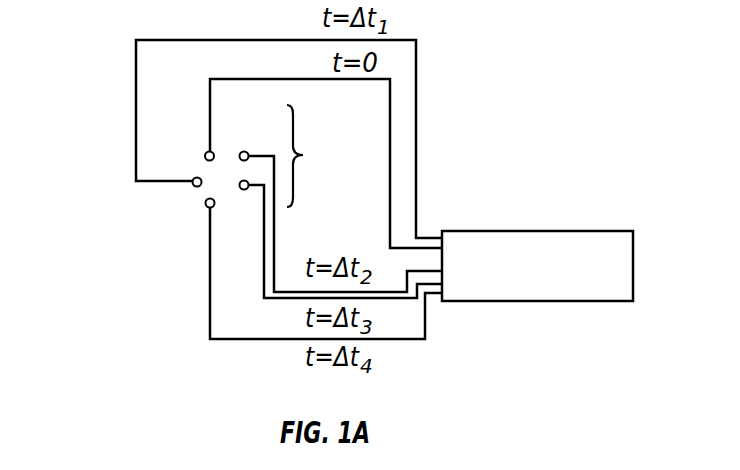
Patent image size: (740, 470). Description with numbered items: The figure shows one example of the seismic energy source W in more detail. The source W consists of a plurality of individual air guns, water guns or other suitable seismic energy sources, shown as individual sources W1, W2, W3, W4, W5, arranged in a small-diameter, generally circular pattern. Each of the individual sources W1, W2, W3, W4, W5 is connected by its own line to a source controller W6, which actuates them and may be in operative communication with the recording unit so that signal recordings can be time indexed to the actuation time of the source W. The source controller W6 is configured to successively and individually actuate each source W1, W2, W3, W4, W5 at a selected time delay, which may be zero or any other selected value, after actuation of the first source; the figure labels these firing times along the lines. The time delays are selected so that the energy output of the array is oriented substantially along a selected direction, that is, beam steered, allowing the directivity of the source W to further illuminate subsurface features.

The seismic energy source W is at (58, 343).
The individual seismic energy source W1 is at (203, 156).
The individual seismic energy source W2 is at (244, 150).
The individual seismic energy source W3 is at (193, 185).
The individual seismic energy source W4 is at (206, 207).
The individual seismic energy source W5 is at (243, 190).
The source controller W6 is at (633, 265).